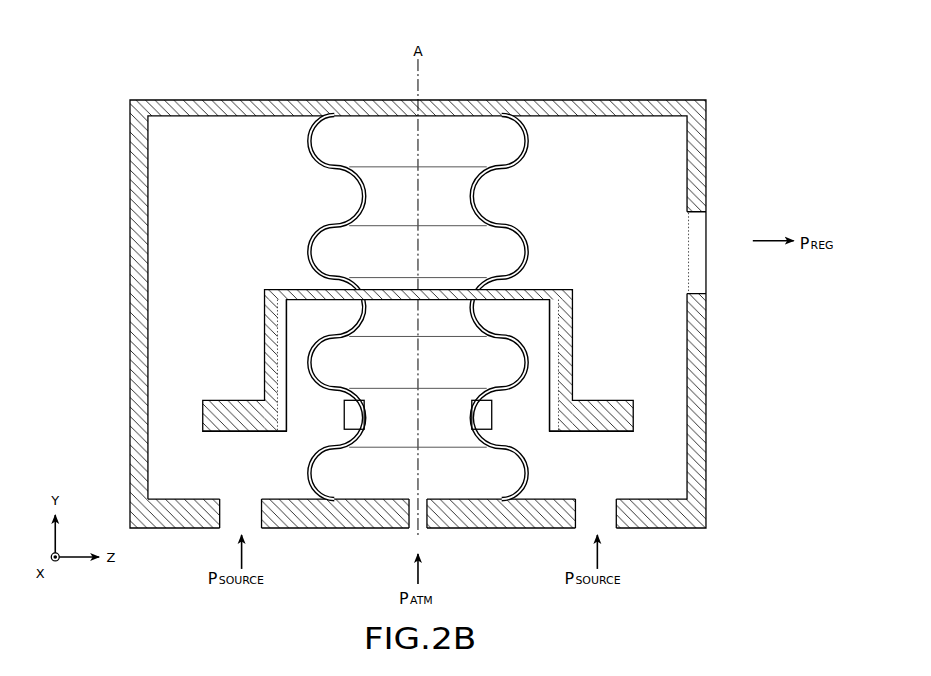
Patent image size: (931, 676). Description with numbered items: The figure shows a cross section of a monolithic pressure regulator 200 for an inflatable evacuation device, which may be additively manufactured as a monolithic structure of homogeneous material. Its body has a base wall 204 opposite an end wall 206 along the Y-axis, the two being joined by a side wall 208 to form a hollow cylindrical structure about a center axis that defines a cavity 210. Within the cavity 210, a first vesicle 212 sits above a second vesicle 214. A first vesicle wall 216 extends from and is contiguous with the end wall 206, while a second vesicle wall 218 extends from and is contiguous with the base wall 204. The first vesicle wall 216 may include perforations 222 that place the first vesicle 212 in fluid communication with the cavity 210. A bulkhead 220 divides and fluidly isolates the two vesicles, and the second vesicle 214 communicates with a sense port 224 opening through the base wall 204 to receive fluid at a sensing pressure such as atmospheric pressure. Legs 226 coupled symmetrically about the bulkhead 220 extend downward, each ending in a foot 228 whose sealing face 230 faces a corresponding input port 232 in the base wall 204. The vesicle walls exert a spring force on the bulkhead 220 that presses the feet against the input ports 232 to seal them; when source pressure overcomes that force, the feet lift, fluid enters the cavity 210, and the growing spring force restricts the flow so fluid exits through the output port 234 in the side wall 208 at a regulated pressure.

The monolithic pressure regulator 200 is at (471, 297).
The base wall 204 is at (658, 520).
The end wall 206 is at (462, 102).
The side wall 208 is at (700, 127).
The cavity 210 is at (604, 202).
The first vesicle 212 is at (412, 207).
The second vesicle 214 is at (399, 400).
The first vesicle wall 216 is at (317, 156).
The second vesicle wall 218 is at (529, 468).
The bulkhead 220 is at (410, 362).
The perforations 222 is at (531, 145).
The sense port 224 is at (413, 517).
The legs 226 is at (271, 339).
The foot 228 is at (232, 398).
The sealing face 230 is at (229, 431).
The input ports 232 is at (228, 517).
The output port 234 is at (702, 219).